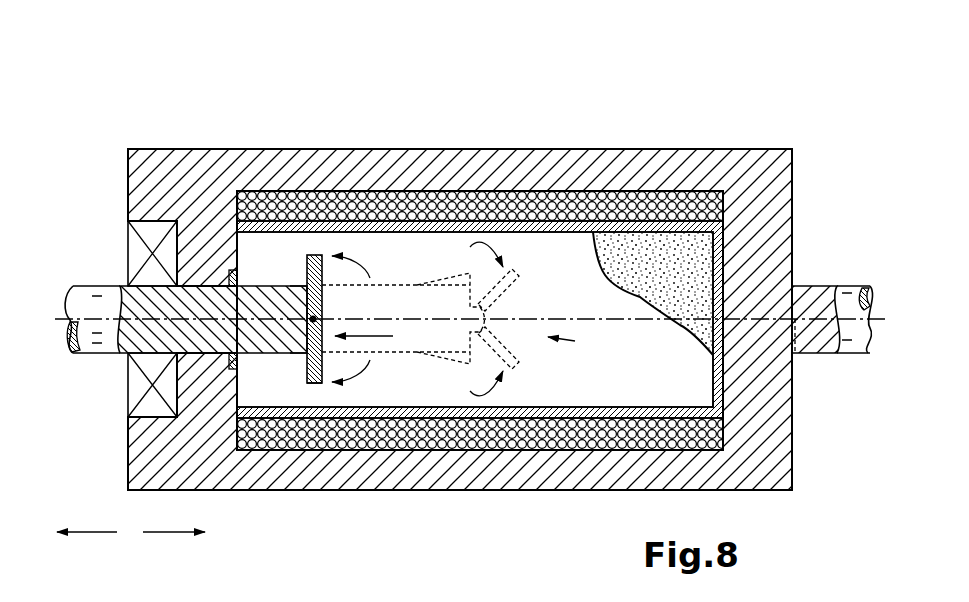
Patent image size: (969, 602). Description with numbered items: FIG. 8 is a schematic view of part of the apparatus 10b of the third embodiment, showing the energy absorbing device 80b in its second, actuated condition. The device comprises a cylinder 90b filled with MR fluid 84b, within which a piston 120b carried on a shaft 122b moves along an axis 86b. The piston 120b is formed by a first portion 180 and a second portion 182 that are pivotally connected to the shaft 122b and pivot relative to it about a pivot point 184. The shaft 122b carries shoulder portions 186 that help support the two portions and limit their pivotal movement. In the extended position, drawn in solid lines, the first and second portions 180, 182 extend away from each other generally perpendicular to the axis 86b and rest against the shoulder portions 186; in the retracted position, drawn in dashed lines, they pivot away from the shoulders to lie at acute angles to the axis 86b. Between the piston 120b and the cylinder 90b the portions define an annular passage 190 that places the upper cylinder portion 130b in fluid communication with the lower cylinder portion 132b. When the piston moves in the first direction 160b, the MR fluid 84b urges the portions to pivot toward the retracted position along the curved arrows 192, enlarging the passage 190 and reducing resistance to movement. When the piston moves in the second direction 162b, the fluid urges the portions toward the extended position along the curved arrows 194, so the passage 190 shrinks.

The apparatus 10b is at (305, 82).
The energy absorbing device 80b is at (385, 73).
The MR fluid 84b is at (613, 263).
The cylinder 90b is at (658, 223).
The upper cylinder portion 130b is at (262, 255).
The lower cylinder portion 132b is at (680, 252).
The shaft 122b is at (90, 305).
The axis 86b is at (795, 355).
The first portion 180 is at (313, 257).
The second portion 182 is at (520, 360).
The pivot point 184 is at (326, 318).
The shoulder portions 186 is at (297, 278).
The annular clearance or passage 190 is at (320, 393).
The curved arrows 194 is at (357, 263).
The curved arrows 192 is at (512, 244).
The piston 120b is at (620, 342).
The first direction 160b is at (87, 519).
The second direction 162b is at (172, 519).